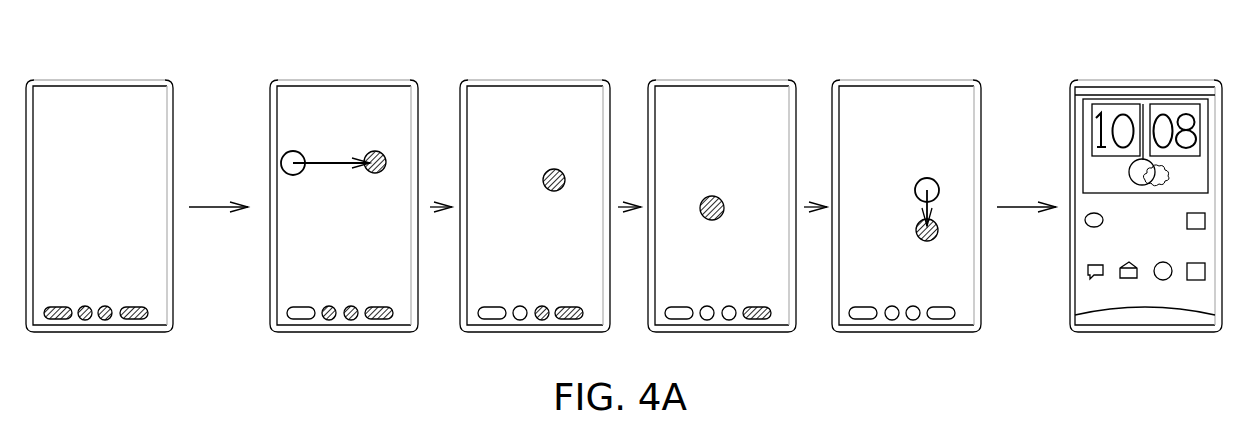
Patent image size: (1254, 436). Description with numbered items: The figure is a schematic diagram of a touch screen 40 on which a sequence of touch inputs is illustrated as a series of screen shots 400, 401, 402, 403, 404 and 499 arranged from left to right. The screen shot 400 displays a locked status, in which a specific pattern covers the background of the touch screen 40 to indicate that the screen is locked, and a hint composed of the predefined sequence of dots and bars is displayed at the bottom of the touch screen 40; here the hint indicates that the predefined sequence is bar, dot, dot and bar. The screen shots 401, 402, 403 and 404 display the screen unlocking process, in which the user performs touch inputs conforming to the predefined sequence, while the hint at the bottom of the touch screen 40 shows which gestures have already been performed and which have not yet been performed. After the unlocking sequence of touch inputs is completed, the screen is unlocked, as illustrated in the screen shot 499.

The touch screen 40 is at (100, 333).
The screen shot 400 is at (146, 57).
The screen shot 401 is at (388, 62).
The screen shot 402 is at (578, 60).
The screen shot 403 is at (765, 62).
The screen shot 404 is at (948, 62).
The screen shot 499 is at (1067, 87).